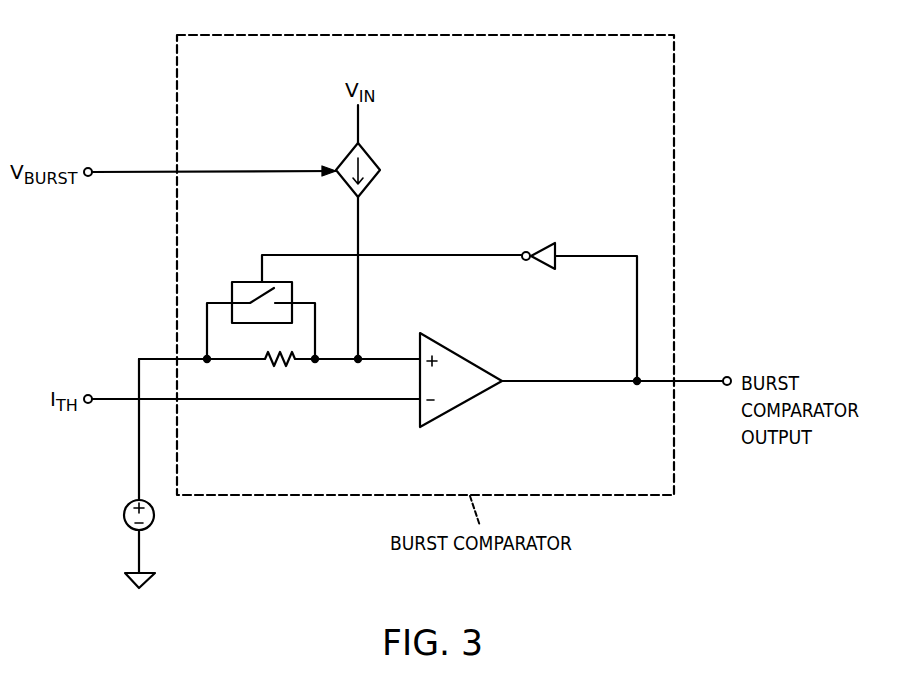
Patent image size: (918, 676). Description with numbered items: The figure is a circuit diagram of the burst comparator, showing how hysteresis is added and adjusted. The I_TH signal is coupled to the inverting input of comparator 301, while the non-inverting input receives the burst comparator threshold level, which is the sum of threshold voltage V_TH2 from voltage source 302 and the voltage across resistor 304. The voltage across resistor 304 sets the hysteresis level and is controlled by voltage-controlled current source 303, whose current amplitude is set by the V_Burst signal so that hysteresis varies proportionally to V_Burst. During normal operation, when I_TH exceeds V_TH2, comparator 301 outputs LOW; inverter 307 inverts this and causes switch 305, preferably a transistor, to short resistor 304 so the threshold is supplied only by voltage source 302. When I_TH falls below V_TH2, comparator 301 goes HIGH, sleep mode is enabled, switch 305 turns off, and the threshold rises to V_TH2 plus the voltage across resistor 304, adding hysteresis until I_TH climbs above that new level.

The comparator 301 is at (475, 399).
The voltage source 302 is at (122, 514).
The voltage-controlled current source 303 is at (372, 156).
The resistor 304 is at (279, 372).
The switch 305 is at (240, 280).
The inverter 307 is at (541, 247).